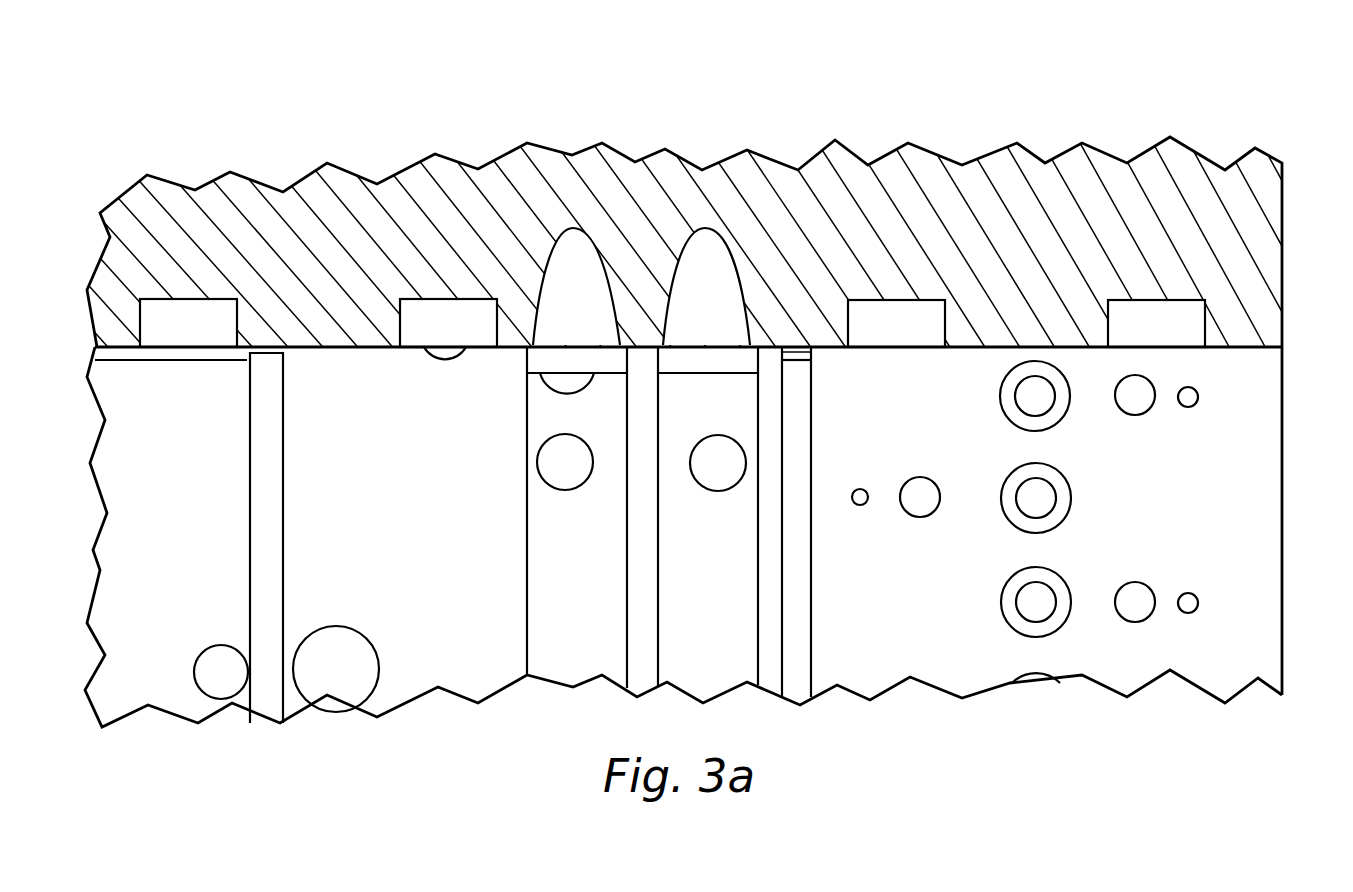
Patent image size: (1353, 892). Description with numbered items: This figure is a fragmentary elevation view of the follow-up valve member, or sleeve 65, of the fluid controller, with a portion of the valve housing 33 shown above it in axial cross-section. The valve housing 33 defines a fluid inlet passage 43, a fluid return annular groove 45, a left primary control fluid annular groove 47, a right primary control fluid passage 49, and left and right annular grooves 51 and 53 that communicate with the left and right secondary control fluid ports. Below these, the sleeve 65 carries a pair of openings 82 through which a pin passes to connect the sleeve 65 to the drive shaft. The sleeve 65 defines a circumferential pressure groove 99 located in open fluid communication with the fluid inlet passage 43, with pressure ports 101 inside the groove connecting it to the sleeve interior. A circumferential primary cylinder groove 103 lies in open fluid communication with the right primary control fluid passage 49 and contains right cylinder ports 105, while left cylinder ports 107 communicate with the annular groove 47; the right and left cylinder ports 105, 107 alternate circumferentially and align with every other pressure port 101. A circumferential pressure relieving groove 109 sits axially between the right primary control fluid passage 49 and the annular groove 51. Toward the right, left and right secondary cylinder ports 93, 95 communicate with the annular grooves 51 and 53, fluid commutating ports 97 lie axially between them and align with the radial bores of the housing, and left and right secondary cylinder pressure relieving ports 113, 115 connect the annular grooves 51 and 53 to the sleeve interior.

The valve housing 33 is at (263, 193).
The fluid inlet passage 43 is at (590, 252).
The right primary control fluid passage 49 is at (720, 252).
The fluid return annular groove 45 is at (175, 328).
The left primary control fluid annular groove 47 is at (417, 333).
The left annular groove 51 is at (897, 320).
The right annular groove 53 is at (1197, 327).
The follow-up valve member 65 is at (1228, 735).
The openings 82 is at (375, 670).
The circumferential pressure groove 99 is at (590, 628).
The circumferential primary cylinder groove 103 is at (731, 628).
The left cylinder ports 107 is at (445, 360).
The circumferential pressure relieving groove 109 is at (807, 355).
The pressure ports 101 is at (548, 388).
The right cylinder ports 105 is at (717, 492).
The fluid commutating ports 97 is at (1008, 420).
The right secondary cylinder ports 95 is at (1135, 414).
The right secondary cylinder pressure relieving ports 115 is at (1198, 400).
The left secondary cylinder pressure relieving ports 113 is at (860, 507).
The left secondary cylinder ports 93 is at (937, 513).